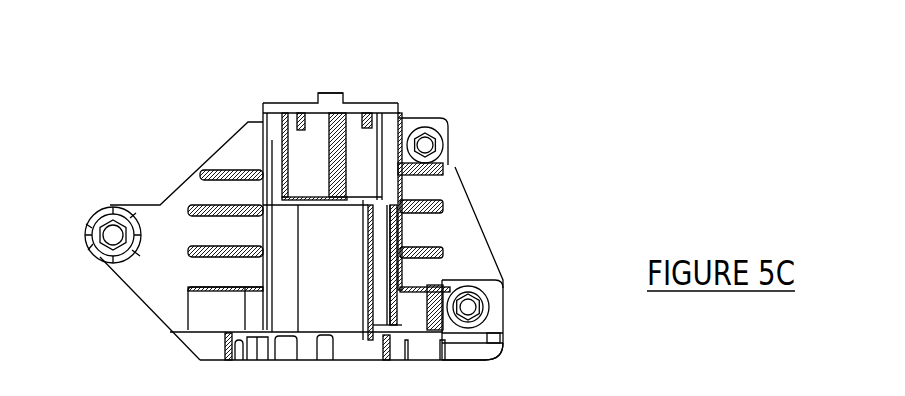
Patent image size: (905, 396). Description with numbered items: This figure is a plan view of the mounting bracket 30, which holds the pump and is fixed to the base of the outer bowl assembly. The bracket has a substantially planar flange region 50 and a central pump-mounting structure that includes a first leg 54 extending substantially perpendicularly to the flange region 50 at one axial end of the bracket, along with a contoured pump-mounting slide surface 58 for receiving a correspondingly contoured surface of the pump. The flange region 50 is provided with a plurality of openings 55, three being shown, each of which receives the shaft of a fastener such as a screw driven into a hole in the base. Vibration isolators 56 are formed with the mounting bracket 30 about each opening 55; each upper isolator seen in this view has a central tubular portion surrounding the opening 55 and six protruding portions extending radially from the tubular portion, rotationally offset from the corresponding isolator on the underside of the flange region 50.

The mounting bracket 30 is at (566, 191).
The flange region 50 is at (412, 120).
The first leg 54 is at (500, 352).
The opening 55 is at (428, 138).
The vibration isolator 56 is at (432, 150).
The pump-mounting slide surface 58 is at (318, 132).